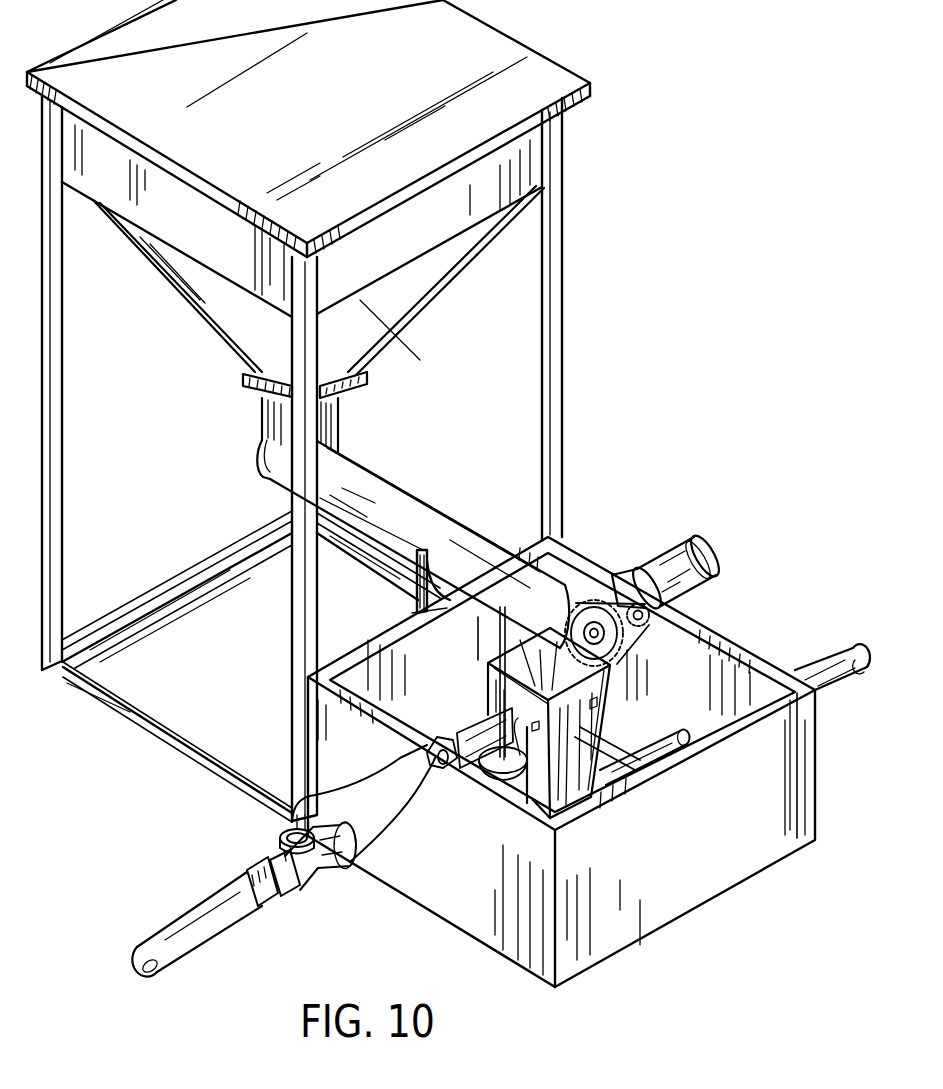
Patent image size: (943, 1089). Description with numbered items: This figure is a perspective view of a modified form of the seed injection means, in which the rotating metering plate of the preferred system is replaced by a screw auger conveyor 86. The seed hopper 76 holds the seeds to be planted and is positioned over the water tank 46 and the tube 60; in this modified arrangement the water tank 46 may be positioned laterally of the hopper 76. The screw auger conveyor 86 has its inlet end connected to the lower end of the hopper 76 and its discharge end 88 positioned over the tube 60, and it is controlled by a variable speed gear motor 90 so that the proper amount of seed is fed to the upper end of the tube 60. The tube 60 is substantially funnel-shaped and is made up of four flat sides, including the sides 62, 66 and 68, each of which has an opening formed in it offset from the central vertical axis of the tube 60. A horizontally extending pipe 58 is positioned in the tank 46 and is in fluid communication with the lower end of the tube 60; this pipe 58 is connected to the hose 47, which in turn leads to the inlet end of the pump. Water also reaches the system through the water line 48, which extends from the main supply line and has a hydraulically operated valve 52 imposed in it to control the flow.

The water tank 46 is at (480, 903).
The hose 47 is at (831, 655).
The water line 48 is at (210, 923).
The hydraulically operated valve 52 is at (328, 868).
The horizontally extending pipe 58 is at (637, 770).
The tube 60 is at (606, 679).
The flat side 62 is at (590, 731).
The flat side 66 is at (497, 666).
The flat side 68 is at (488, 699).
The seed hopper 76 is at (365, 318).
The screw auger conveyor 86 is at (410, 511).
The discharge end 88 is at (568, 600).
The variable speed gear motor 90 is at (672, 556).